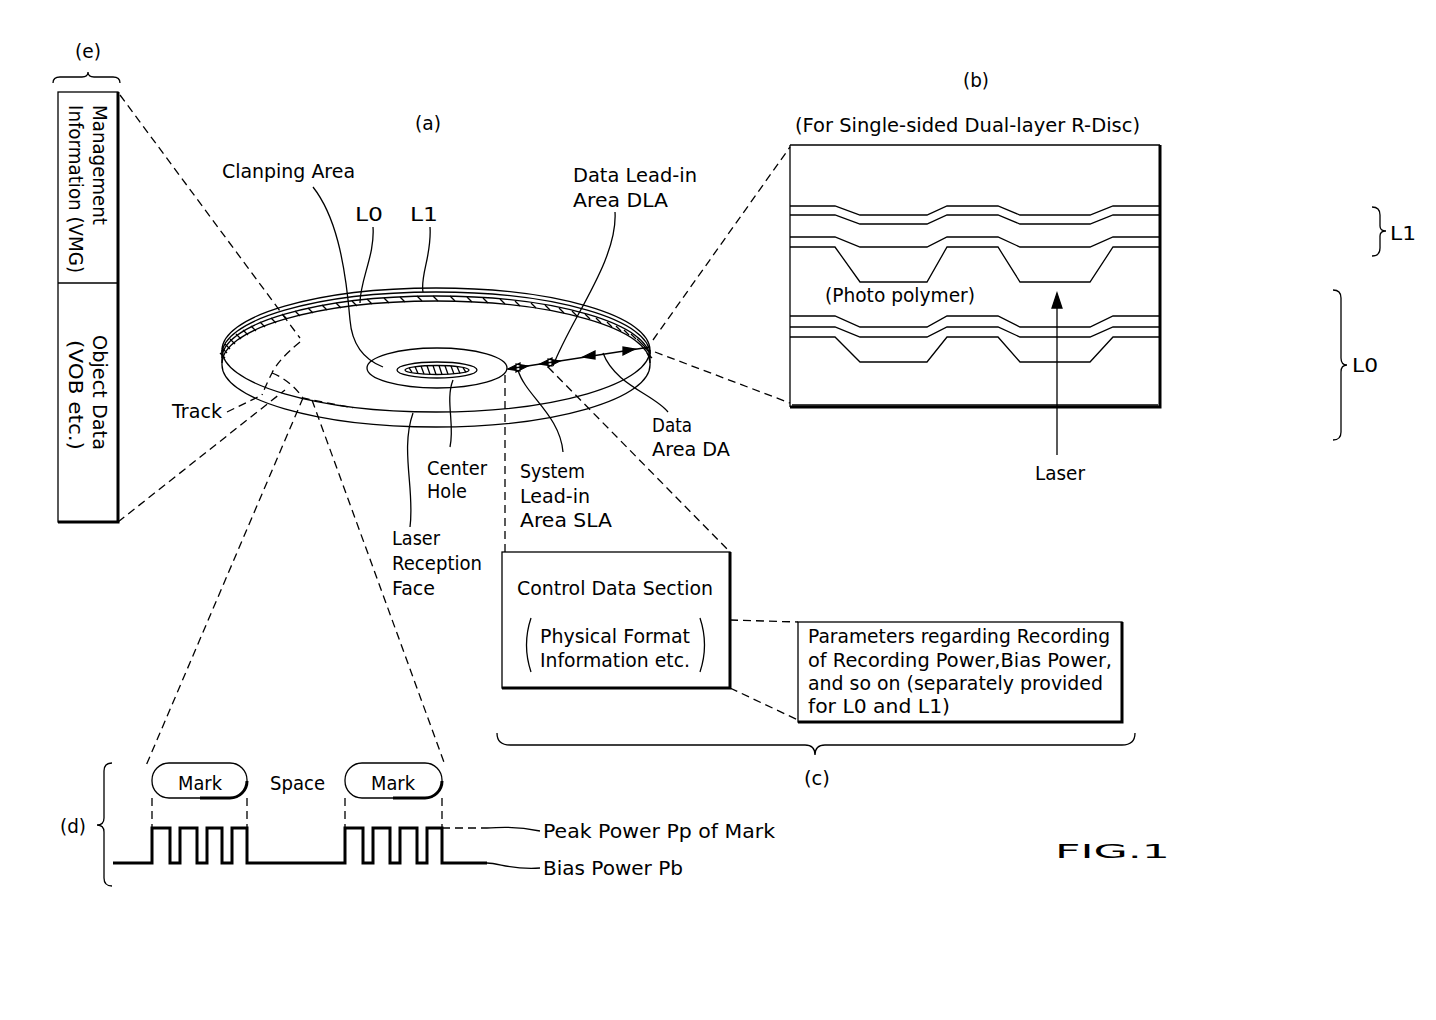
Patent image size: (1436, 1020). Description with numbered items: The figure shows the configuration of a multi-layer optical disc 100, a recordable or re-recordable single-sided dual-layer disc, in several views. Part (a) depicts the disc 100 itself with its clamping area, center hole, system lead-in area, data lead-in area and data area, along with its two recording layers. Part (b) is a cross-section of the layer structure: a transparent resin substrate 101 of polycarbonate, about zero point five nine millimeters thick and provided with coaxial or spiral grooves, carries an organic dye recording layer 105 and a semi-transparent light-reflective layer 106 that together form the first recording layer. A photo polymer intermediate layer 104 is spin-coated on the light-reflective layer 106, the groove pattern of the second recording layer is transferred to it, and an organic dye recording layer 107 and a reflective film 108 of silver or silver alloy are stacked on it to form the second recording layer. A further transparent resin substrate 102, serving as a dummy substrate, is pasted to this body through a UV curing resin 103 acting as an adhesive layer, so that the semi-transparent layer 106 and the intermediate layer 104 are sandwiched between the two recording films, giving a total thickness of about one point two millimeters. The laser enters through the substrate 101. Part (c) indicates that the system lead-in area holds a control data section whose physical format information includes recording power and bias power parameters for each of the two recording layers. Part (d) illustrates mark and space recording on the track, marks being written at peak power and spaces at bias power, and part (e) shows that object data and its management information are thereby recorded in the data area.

The multi-layer optical disc 100 is at (463, 235).
The transparent resin substrate 101 is at (1105, 398).
The transparent resin substrate (dummy substrate) 102 is at (1148, 160).
The UV curing resin (adhesive layer) 103 is at (1160, 200).
The intermediate layer 104 is at (1160, 270).
The organic dye recording layer 105 is at (1160, 345).
The semi-transparent light-reflective layer 106 is at (1160, 320).
The organic dye recording layer 107 is at (1160, 240).
The reflective film 108 is at (1160, 217).